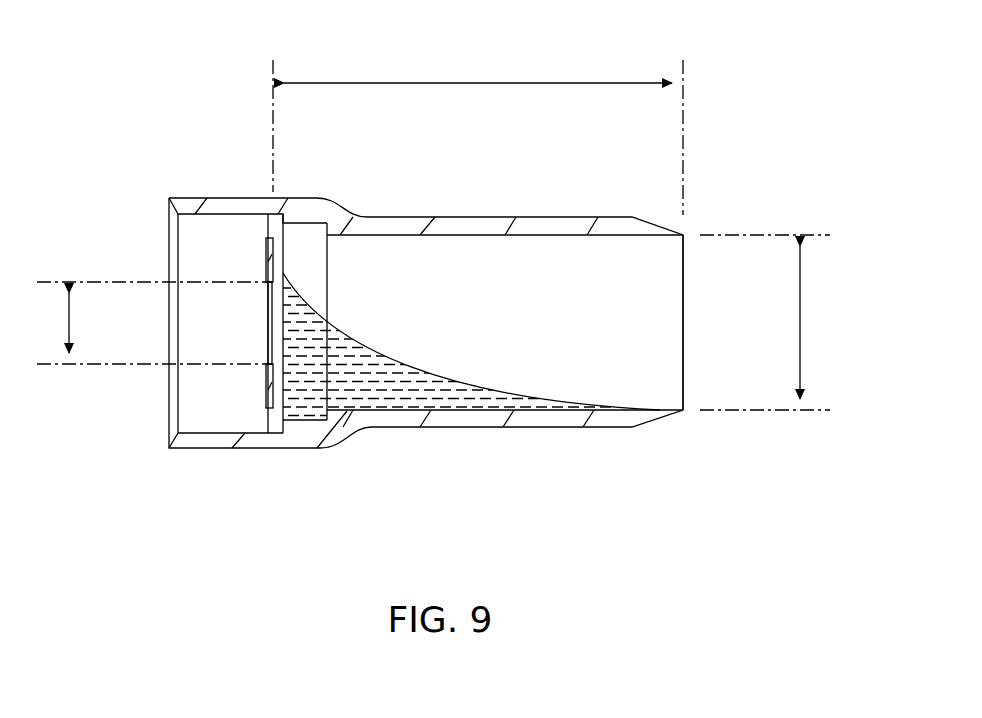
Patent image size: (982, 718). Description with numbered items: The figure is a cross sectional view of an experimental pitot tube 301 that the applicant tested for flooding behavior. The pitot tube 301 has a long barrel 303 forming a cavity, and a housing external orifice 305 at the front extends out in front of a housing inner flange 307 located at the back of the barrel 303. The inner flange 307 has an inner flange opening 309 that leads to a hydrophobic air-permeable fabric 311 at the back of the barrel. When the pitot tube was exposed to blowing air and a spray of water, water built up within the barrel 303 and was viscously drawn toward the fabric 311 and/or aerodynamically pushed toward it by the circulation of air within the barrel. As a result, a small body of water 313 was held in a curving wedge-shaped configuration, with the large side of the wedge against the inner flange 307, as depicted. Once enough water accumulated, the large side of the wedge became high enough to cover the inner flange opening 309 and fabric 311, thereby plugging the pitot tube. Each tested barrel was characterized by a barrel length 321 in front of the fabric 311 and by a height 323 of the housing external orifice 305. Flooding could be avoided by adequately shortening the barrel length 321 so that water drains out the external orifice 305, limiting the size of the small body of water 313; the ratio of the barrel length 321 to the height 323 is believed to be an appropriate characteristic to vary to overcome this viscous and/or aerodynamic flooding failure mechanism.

The pitot tube 301 is at (256, 465).
The barrel 303 is at (410, 280).
The housing external orifice 305 is at (683, 323).
The housing inner flange 307 is at (268, 235).
The inner flange opening 309 is at (272, 325).
The hydrophobic air-permeable fabric 311 is at (268, 388).
The small body of water 313 is at (375, 388).
The barrel length 321 is at (477, 82).
The height of the housing external orifice 323 is at (800, 280).